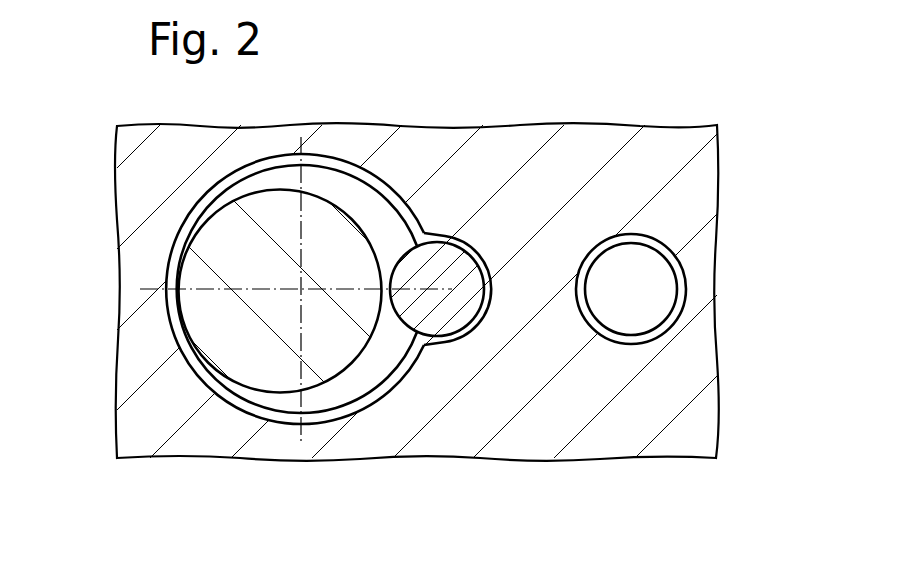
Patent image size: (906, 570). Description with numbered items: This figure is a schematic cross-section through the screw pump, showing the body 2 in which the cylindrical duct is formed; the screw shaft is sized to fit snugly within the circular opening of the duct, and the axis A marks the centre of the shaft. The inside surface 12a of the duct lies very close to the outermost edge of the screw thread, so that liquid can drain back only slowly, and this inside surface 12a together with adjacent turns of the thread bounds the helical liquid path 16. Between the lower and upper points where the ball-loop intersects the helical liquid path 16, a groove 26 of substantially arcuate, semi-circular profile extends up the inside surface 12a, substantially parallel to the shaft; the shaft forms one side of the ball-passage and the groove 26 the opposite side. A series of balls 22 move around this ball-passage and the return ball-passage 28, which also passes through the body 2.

The body 2 is at (532, 188).
The inside surface 12a is at (185, 222).
The helical liquid path 16 is at (347, 188).
The groove 26 is at (447, 235).
The balls 22 is at (638, 262).
The return ball-passage 28 is at (688, 289).
The axis A is at (300, 285).